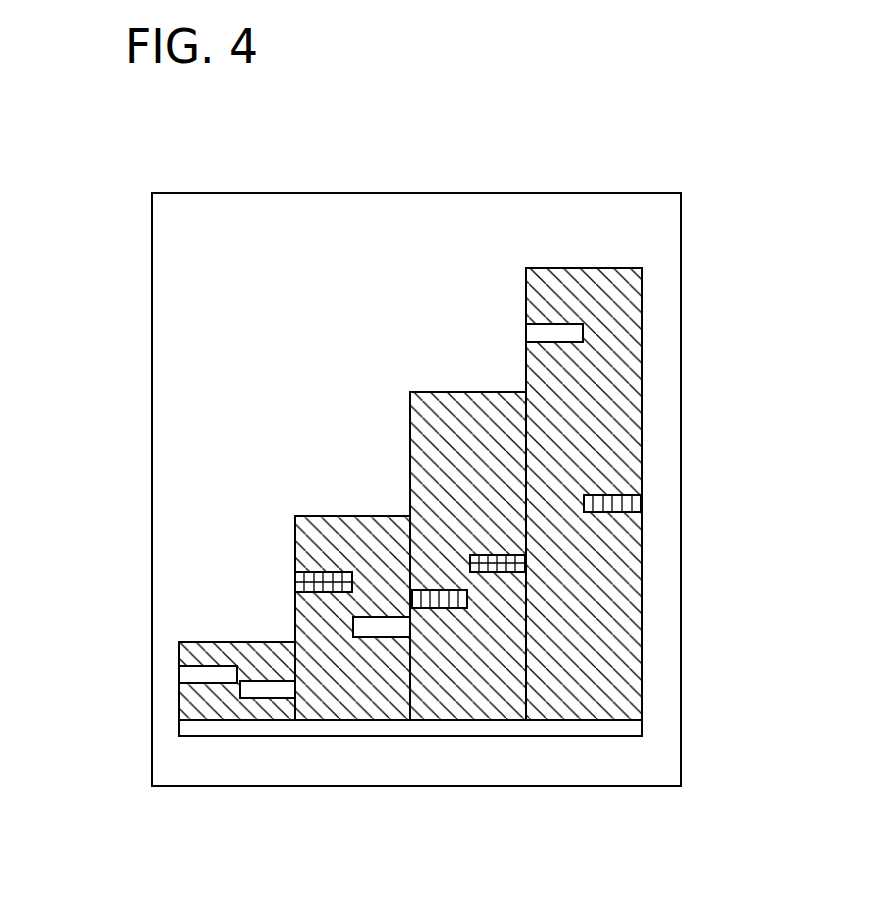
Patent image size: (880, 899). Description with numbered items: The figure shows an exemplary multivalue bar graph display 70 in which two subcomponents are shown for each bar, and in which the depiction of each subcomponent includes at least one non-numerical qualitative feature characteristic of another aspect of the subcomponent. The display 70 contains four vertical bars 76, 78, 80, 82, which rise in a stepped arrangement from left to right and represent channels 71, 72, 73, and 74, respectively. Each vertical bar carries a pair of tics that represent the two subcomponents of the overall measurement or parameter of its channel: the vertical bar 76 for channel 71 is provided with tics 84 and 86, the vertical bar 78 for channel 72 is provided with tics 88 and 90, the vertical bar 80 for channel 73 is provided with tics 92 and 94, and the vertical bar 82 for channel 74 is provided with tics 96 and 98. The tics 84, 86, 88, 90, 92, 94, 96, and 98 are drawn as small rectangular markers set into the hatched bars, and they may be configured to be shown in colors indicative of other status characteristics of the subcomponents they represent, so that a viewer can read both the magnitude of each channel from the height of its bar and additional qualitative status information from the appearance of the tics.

The multivalue bar graph display 70 is at (71, 277).
The channel 71 is at (237, 681).
The channel 72 is at (352, 618).
The channel 73 is at (468, 556).
The channel 74 is at (584, 494).
The vertical bar 76 is at (192, 642).
The vertical bar 78 is at (350, 516).
The vertical bar 80 is at (467, 392).
The vertical bar 82 is at (594, 268).
The tic 84 is at (187, 678).
The tic 86 is at (260, 690).
The tic 88 is at (305, 580).
The tic 90 is at (387, 632).
The tic 92 is at (440, 597).
The tic 94 is at (523, 557).
The tic 96 is at (553, 332).
The tic 98 is at (612, 495).